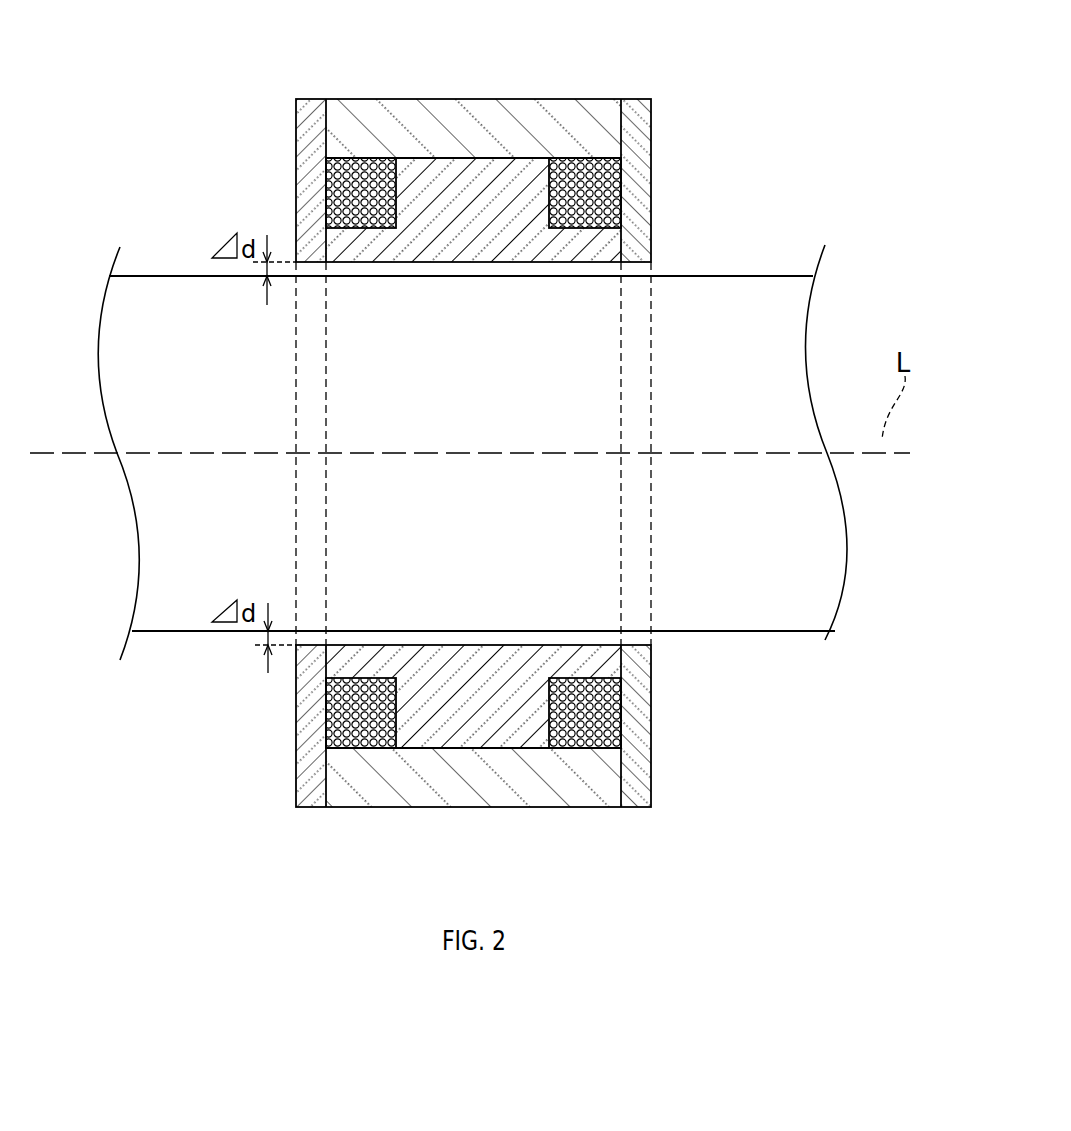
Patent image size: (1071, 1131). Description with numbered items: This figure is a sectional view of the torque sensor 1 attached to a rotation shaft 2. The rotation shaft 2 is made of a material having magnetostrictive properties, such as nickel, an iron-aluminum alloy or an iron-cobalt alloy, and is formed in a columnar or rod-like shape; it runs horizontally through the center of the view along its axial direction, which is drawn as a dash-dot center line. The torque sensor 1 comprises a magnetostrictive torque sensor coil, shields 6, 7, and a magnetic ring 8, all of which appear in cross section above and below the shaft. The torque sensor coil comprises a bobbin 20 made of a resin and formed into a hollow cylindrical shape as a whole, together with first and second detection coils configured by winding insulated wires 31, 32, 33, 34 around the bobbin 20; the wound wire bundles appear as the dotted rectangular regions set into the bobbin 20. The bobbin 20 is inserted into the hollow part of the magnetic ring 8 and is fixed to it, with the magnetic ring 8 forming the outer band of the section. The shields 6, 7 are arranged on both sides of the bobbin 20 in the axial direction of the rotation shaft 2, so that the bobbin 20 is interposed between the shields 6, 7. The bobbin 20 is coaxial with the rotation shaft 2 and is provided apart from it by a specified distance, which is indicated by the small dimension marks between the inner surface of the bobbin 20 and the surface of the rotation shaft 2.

The torque sensor 1 is at (710, 68).
The rotation shaft 2 is at (173, 305).
The shield 6 is at (305, 158).
The shield 7 is at (637, 171).
The magnetic ring 8 is at (377, 108).
The bobbin 20 is at (455, 180).
The insulated wire 31 is at (475, 453).
The insulated wire 33 is at (605, 210).
The insulated wire 32 is at (477, 454).
The insulated wire 34 is at (365, 183).